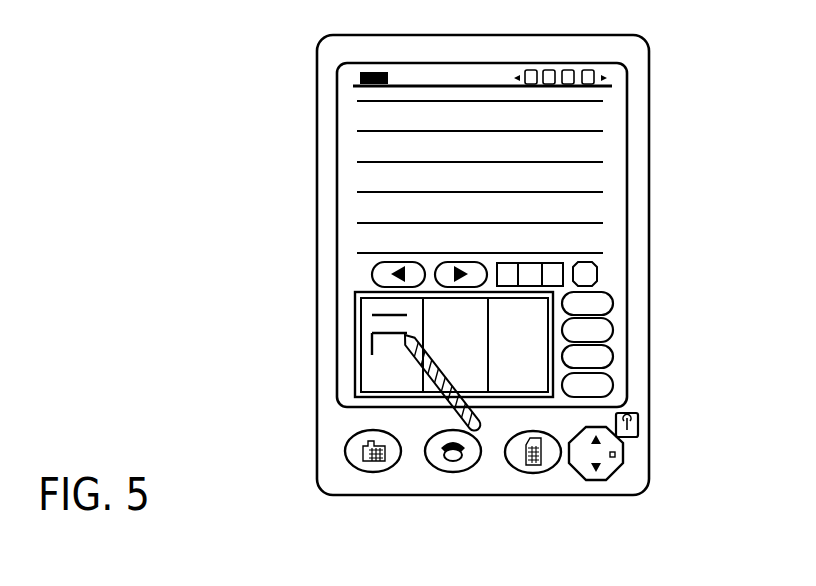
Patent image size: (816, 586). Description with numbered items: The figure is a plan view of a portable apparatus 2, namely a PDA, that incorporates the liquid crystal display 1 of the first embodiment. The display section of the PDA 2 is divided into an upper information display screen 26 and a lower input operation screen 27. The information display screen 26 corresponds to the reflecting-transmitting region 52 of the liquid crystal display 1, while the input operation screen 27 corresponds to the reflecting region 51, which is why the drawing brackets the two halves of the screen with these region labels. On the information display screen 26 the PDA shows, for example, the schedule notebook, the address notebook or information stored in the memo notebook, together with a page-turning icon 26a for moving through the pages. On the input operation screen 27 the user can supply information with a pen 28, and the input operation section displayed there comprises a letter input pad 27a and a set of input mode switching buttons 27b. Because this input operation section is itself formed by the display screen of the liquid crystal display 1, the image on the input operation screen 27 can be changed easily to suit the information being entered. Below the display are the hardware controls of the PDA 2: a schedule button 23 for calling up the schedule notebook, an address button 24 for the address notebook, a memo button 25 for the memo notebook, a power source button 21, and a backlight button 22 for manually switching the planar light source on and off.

The liquid crystal display 1 is at (353, 83).
The portable apparatus 2 is at (665, 49).
The power source button 21 is at (608, 462).
The backlight button 22 is at (640, 421).
The schedule button 23 is at (370, 472).
The address button 24 is at (453, 472).
The memo button 25 is at (533, 474).
The information display screen 26 is at (310, 63).
The page-turning icon 26a is at (371, 277).
The input operation screen 27 is at (310, 292).
The letter input pad 27a is at (365, 362).
The input mode switching button 27b is at (613, 303).
The pen 28 is at (413, 357).
The reflecting region 51 is at (220, 290).
The reflecting-transmitting region 52 is at (220, 63).